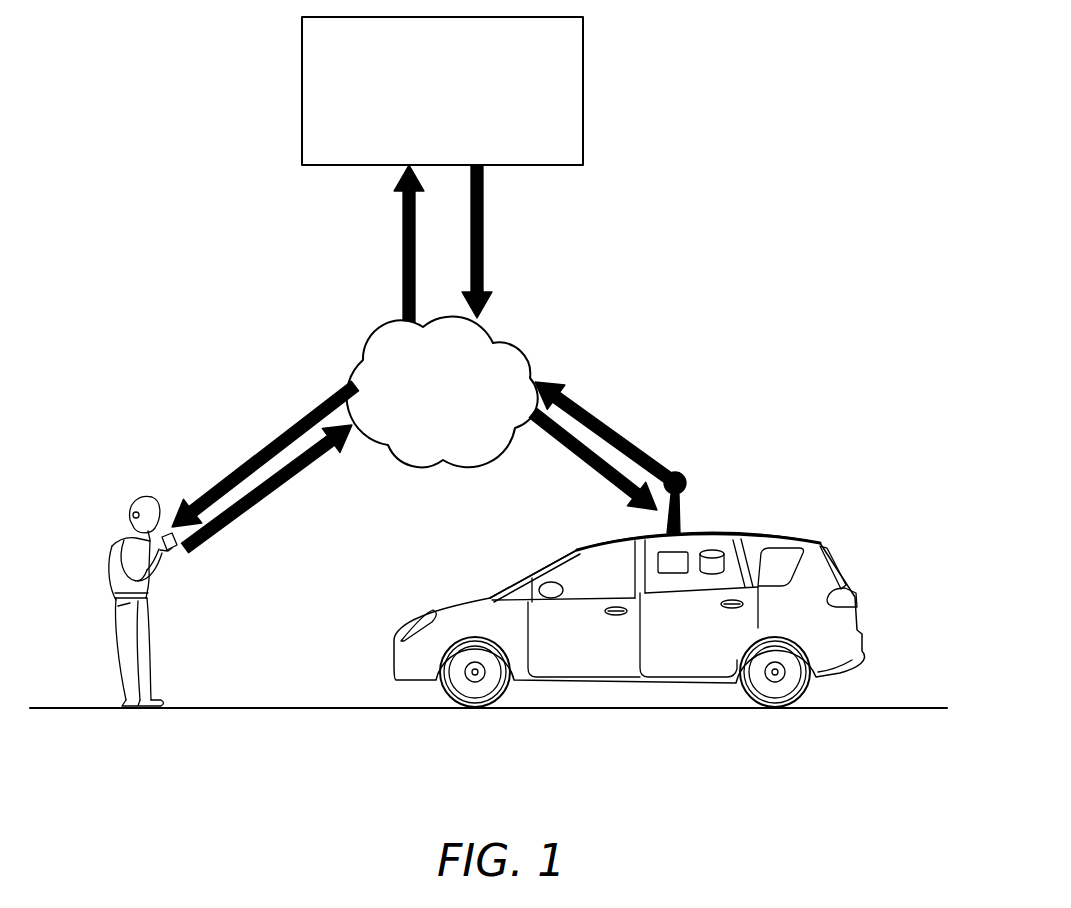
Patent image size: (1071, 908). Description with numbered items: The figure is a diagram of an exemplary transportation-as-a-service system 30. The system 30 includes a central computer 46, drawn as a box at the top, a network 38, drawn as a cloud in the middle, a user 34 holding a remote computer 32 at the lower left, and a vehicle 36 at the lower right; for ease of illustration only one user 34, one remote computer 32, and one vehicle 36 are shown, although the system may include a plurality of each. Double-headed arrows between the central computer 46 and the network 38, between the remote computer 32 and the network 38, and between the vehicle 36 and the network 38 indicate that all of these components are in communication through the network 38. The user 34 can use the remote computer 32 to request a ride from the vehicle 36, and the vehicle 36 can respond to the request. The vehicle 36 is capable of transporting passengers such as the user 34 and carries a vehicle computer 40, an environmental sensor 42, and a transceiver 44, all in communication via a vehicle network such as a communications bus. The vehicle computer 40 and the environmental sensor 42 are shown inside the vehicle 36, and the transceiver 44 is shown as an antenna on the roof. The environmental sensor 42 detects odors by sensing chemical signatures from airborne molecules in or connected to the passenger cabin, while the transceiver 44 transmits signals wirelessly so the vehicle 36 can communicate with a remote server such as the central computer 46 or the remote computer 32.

The transportation-as-a-service system 30 is at (852, 110).
The remote computer 32 is at (170, 552).
The user 34 is at (112, 546).
The vehicle 36 is at (858, 603).
The network 38 is at (530, 350).
The vehicle computer 40 is at (657, 560).
The environmental sensor 42 is at (727, 563).
The transceiver 44 is at (683, 510).
The central computer 46 is at (585, 41).